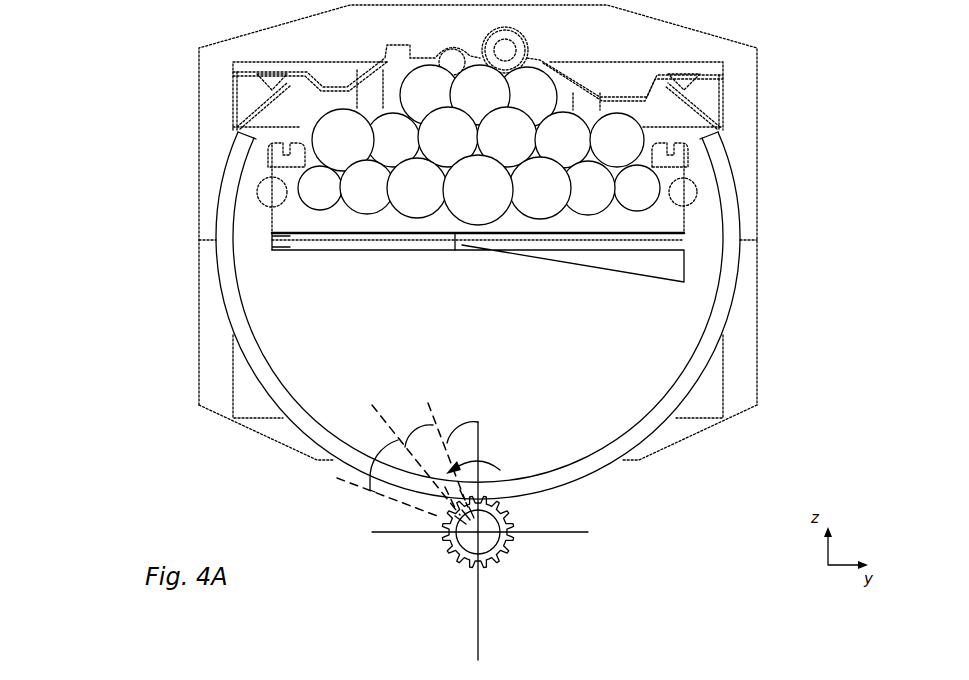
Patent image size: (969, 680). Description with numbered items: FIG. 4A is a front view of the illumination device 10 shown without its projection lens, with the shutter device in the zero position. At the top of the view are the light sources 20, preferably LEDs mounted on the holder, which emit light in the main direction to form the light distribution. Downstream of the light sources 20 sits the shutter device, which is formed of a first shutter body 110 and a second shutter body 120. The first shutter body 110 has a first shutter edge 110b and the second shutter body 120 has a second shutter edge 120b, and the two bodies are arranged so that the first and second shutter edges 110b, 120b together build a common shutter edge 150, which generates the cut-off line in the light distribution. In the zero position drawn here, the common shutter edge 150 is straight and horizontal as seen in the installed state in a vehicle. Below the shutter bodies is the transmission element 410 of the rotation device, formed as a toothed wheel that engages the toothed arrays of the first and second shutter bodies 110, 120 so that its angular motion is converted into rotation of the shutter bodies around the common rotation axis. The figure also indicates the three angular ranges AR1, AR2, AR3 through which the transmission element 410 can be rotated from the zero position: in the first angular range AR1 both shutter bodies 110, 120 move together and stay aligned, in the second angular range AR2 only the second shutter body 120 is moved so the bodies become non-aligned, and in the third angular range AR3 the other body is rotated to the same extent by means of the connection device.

The illumination device 10 is at (116, 58).
The light sources 20 is at (624, 138).
The first shutter body 110 is at (283, 341).
The first shutter edge 110b is at (283, 243).
The second shutter body 120 is at (670, 268).
The second shutter edge 120b is at (638, 236).
The common shutter edge 150 is at (463, 243).
The transmission element 410 is at (493, 560).
The first angular range AR1 is at (465, 443).
The second angular range AR2 is at (427, 437).
The third angular range AR3 is at (387, 452).